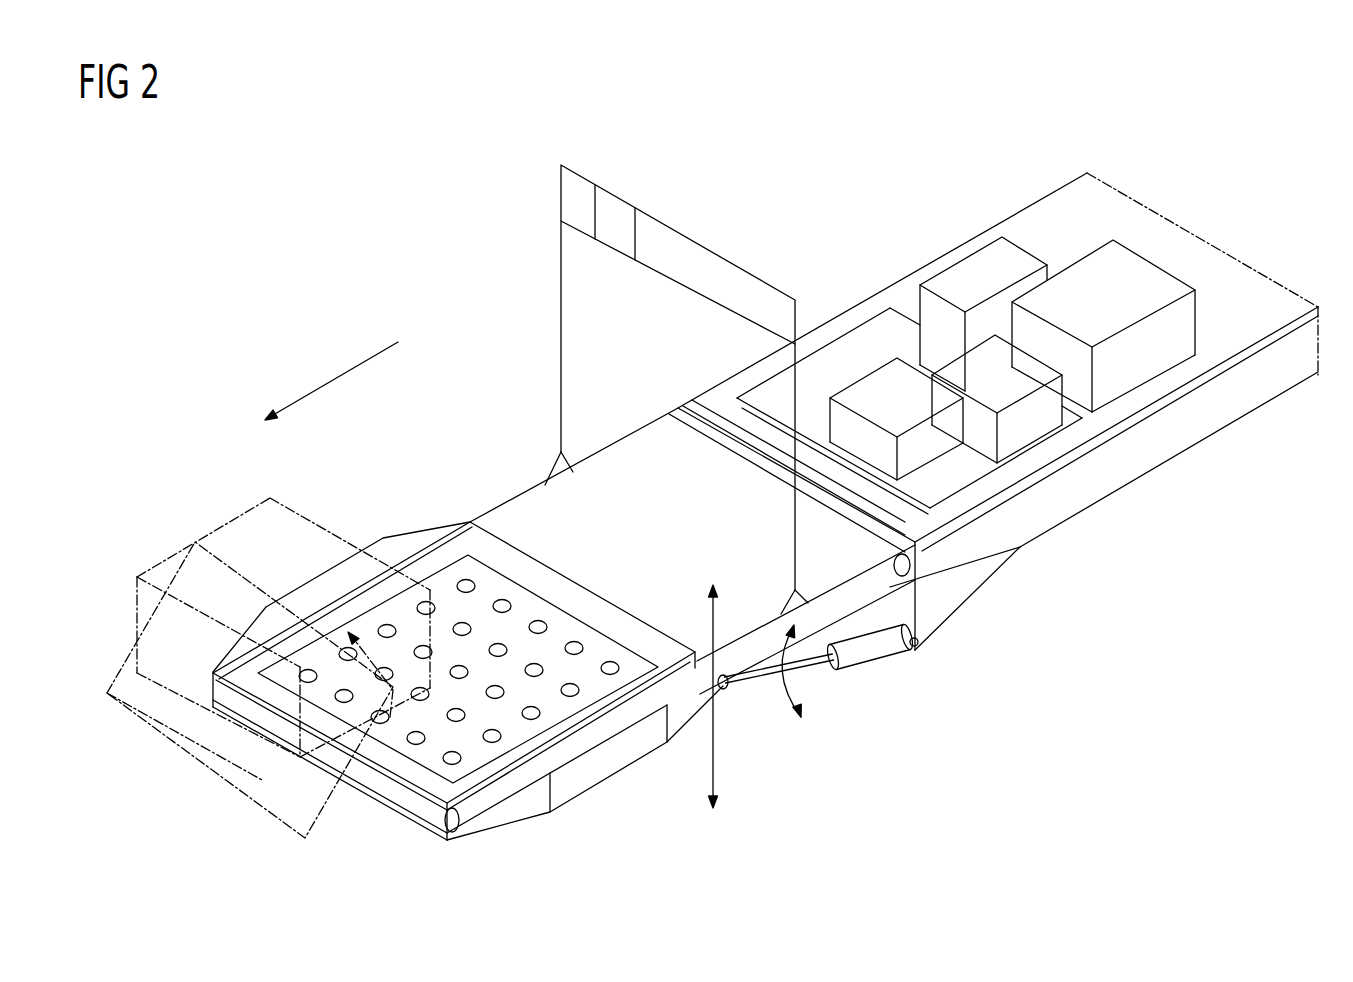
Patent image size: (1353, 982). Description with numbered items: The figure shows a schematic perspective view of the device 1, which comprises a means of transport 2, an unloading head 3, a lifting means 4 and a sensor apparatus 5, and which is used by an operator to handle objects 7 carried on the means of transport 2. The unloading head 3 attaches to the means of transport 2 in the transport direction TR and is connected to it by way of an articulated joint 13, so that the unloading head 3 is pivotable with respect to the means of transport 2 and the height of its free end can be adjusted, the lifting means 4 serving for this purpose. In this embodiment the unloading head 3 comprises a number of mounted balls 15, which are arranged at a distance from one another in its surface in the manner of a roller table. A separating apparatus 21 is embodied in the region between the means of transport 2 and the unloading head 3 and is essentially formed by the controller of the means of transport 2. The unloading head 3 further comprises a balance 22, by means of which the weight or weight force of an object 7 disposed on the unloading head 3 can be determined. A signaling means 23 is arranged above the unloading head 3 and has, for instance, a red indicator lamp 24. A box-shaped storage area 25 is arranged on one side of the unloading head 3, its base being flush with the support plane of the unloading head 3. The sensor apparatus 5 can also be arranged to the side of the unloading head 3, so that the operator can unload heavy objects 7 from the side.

The device 1 is at (1062, 720).
The means of transport 2 is at (1232, 412).
The unloading head 3 is at (444, 512).
The lifting means 4 is at (864, 652).
The sensor apparatus 5 is at (376, 802).
The objects 7 is at (1134, 268).
The articulated joint 13 is at (922, 590).
The mounted balls 15 is at (546, 621).
The separating apparatus 21 is at (995, 602).
The balance 22 is at (526, 588).
The signaling means 23 is at (627, 181).
The red indicator lamp 24 is at (607, 205).
The storage area 25 is at (609, 782).